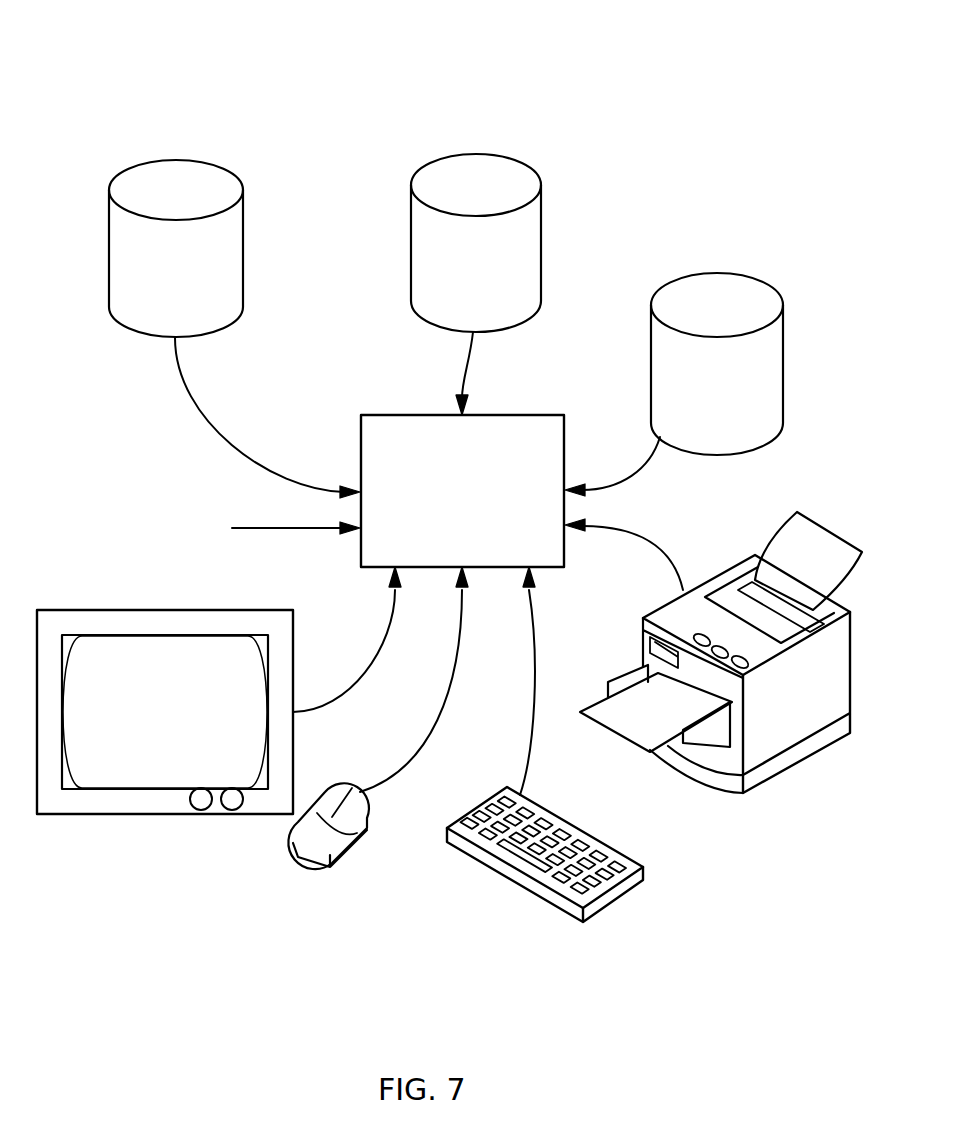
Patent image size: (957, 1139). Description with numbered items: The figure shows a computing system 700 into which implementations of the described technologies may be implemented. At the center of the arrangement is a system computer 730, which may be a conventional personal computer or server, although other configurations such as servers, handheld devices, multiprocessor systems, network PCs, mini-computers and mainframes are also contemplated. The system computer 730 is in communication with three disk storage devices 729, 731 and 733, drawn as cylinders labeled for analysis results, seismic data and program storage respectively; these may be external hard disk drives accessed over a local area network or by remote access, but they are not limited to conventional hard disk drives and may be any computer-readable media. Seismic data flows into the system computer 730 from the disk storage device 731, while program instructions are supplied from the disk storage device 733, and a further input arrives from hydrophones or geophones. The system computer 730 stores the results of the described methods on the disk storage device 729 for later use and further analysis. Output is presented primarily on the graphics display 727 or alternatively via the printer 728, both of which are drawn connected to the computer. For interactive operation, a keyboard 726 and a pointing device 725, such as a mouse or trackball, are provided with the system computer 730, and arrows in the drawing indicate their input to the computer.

The computing system 700 is at (217, 68).
The pointing device 725 is at (310, 866).
The keyboard 726 is at (607, 912).
The graphics display 727 is at (165, 814).
The printer 728 is at (760, 783).
The disk storage device 729 is at (716, 273).
The system computer 730 is at (498, 415).
The disk storage device 731 is at (523, 156).
The disk storage device 733 is at (213, 162).